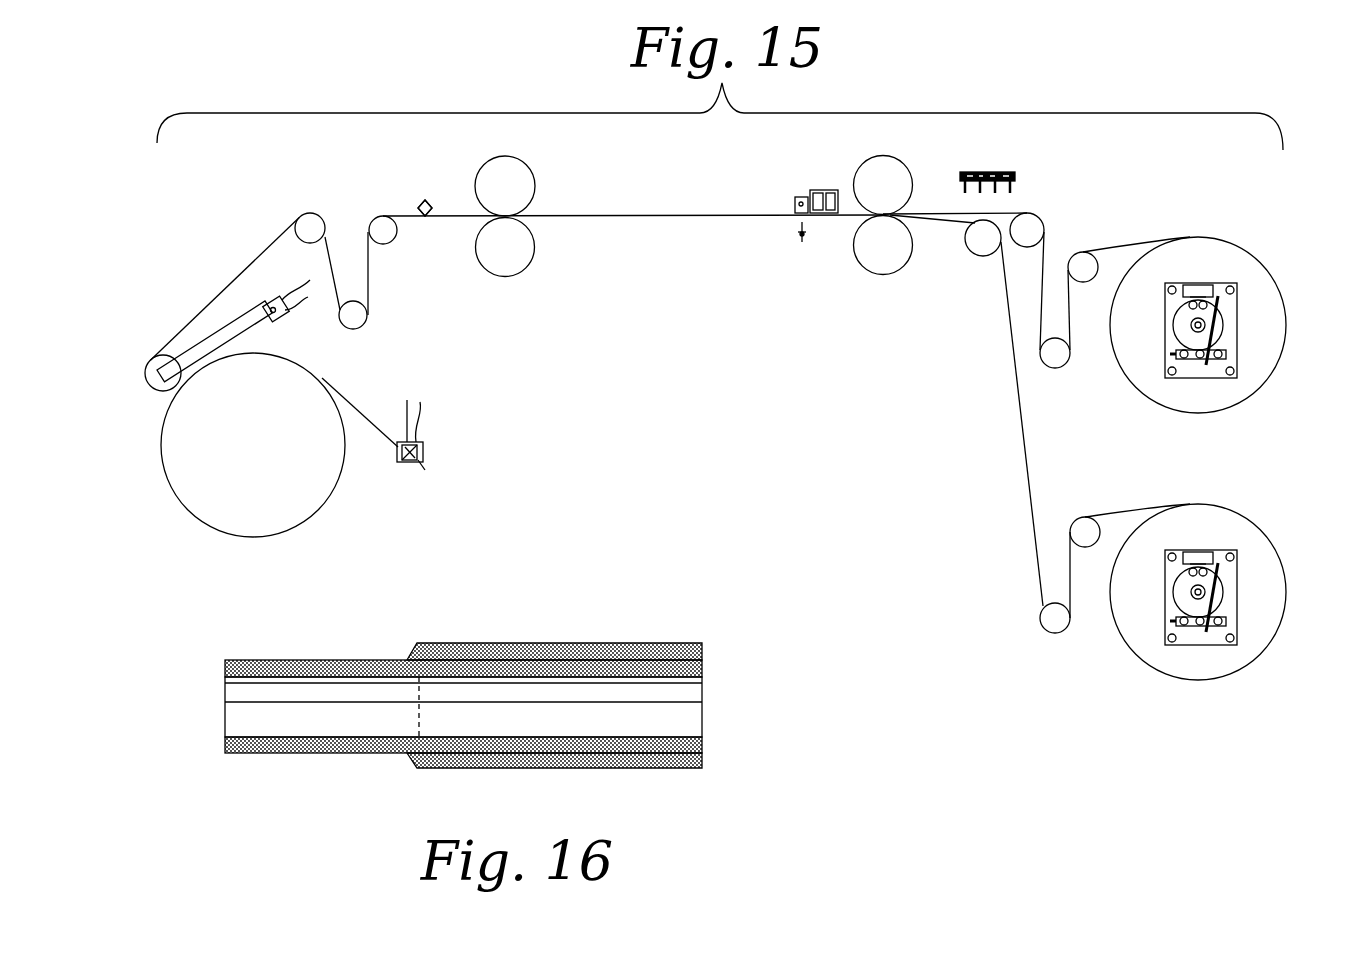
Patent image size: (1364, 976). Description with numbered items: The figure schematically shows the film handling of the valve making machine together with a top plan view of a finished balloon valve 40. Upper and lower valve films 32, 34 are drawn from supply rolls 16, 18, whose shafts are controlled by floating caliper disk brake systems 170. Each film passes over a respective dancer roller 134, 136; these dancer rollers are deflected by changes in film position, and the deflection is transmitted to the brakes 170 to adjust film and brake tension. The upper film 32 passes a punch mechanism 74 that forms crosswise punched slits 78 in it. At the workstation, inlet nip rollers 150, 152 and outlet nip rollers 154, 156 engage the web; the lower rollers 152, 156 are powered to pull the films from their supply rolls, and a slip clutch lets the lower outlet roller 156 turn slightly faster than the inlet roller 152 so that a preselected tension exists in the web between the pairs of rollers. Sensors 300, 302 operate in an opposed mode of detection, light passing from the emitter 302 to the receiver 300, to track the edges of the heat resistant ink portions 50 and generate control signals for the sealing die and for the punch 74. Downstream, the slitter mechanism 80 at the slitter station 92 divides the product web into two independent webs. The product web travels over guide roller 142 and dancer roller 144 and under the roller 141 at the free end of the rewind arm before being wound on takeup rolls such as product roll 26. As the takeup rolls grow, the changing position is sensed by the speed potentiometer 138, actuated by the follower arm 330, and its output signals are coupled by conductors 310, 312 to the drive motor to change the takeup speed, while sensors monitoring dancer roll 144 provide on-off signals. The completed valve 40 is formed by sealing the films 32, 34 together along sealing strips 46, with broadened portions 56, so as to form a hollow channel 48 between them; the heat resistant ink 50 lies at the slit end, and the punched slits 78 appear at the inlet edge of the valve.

In FIG. 15, the free end of rewind arm 141 is at (160, 357).
In FIG. 15, the guide roller 142 is at (380, 227).
In FIG. 15, the dancer roller 144 is at (360, 316).
In FIG. 15, the slitter mechanism 80 is at (424, 200).
In FIG. 15, the slitter station 92 is at (425, 208).
In FIG. 15, the outlet nip roller 154 is at (522, 181).
In FIG. 15, the outlet nip roller 156 is at (522, 245).
In FIG. 15, the sensor 300 is at (800, 194).
In FIG. 15, the sensor 302 is at (797, 232).
In FIG. 15, the inlet nip roller 150 is at (893, 175).
In FIG. 15, the inlet nip roller 152 is at (885, 262).
In FIG. 15, the punch mechanism 74 is at (992, 162).
In FIG. 15, the upper valve film 32 is at (1108, 240).
In FIG. 15, the dancer roller 134 is at (1055, 368).
In FIG. 15, the dancer roller 136 is at (1055, 634).
In FIG. 15, the braking system 170 is at (1203, 280).
In FIG. 15, the supply roll 16 is at (1255, 300).
In FIG. 15, the supply roll 18 is at (1258, 548).
In FIG. 15, the product roll 26 is at (198, 498).
In FIG. 15, the follower arm 330 is at (378, 442).
In FIG. 15, the speed potentiometer 138 is at (425, 452).
In FIG. 15, the conductor 310 is at (407, 415).
In FIG. 15, the conductor 312 is at (420, 417).
In FIG. 15, the lower valve film 34 is at (1110, 504).
In FIG. 16, the valve 40 is at (470, 698).
In FIG. 16, the sealing strip 46 is at (293, 659).
In FIG. 16, the broadened portion of sealing line 56 is at (465, 642).
In FIG. 16, the hollow channel 48 is at (240, 717).
In FIG. 16, the heat resistant coating segment 50 is at (703, 692).
In FIG. 16, the punched slit 78 is at (665, 705).